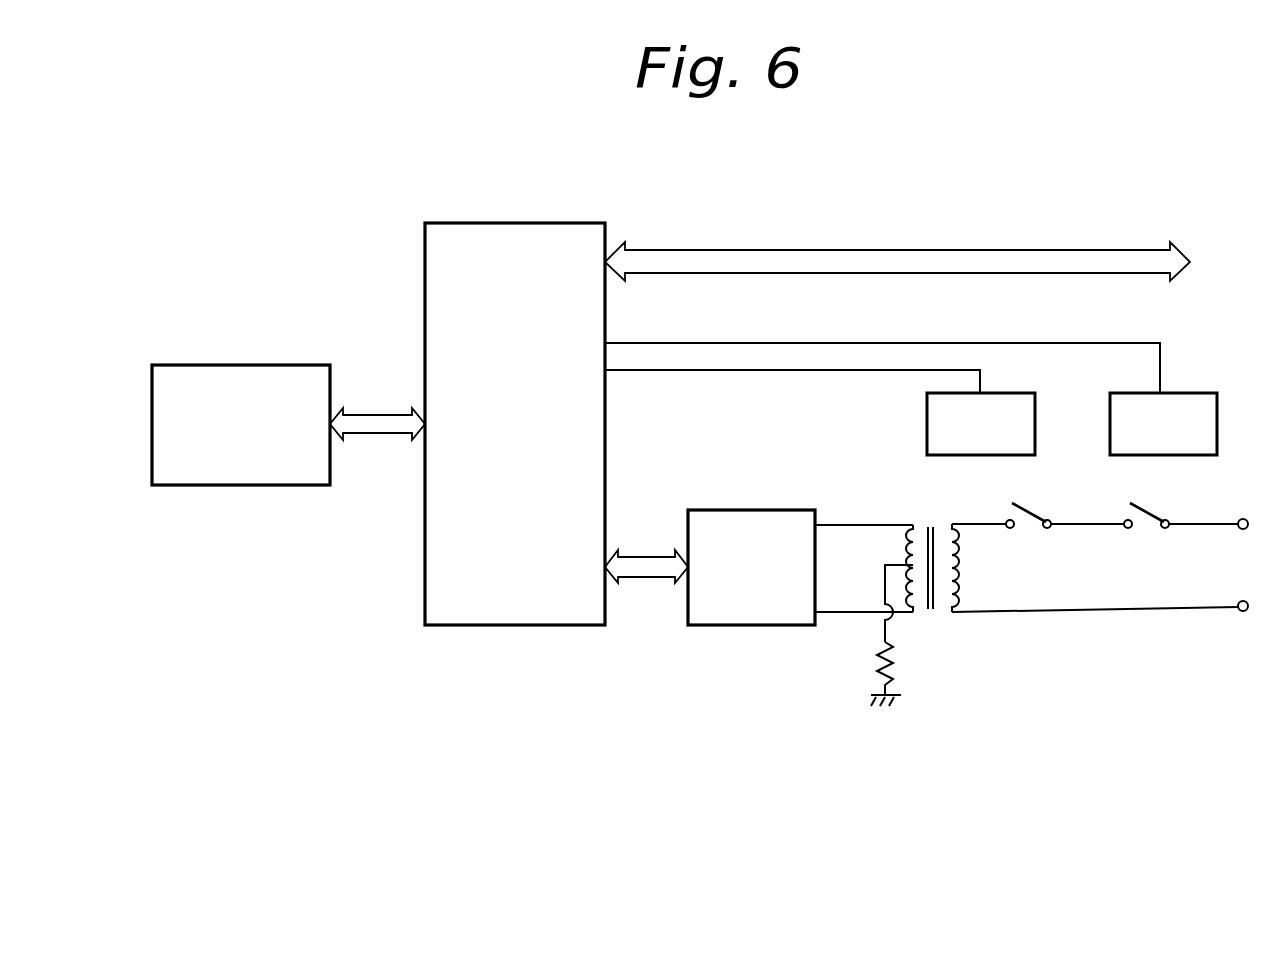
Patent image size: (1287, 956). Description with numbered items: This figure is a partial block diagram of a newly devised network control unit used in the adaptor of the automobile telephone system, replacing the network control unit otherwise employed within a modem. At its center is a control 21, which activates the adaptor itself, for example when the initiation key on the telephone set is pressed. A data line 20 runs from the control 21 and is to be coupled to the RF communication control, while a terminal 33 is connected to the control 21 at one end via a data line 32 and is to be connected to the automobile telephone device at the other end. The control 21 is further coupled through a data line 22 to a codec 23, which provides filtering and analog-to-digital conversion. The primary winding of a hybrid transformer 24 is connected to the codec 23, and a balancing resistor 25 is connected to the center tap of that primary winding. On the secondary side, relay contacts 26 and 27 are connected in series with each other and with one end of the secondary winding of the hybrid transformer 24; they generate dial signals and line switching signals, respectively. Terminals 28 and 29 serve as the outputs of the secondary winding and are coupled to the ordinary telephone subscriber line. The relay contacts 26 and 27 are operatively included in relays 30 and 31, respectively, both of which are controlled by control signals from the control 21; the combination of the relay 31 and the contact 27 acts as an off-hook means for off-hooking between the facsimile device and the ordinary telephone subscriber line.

The data line 20 is at (893, 250).
The control 21 is at (512, 223).
The data line 22 is at (645, 562).
The codec 23 is at (740, 510).
The hybrid transformer 24 is at (931, 522).
The balancing resistor 25 is at (897, 650).
The relay contact 26 is at (1028, 531).
The relay contact 27 is at (1146, 531).
The terminal 28 is at (1245, 519).
The terminal 29 is at (1245, 611).
The relay 30 is at (1015, 393).
The relay 31 is at (1190, 393).
The data line 32 is at (375, 433).
The terminal 33 is at (230, 485).